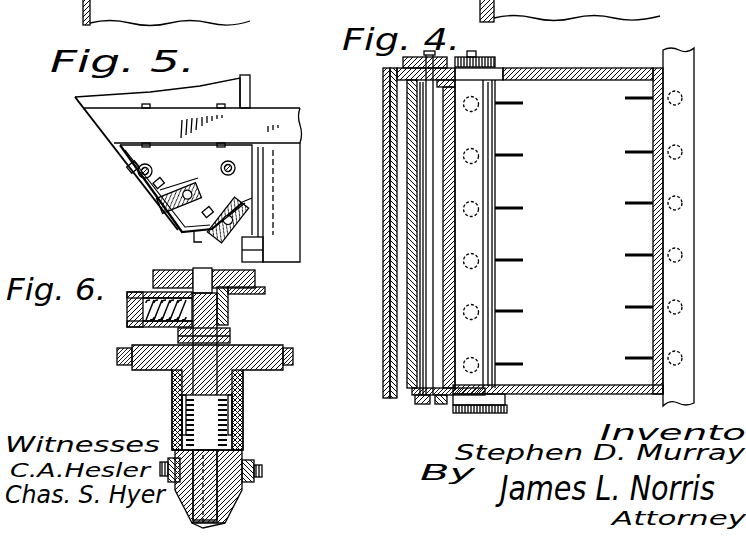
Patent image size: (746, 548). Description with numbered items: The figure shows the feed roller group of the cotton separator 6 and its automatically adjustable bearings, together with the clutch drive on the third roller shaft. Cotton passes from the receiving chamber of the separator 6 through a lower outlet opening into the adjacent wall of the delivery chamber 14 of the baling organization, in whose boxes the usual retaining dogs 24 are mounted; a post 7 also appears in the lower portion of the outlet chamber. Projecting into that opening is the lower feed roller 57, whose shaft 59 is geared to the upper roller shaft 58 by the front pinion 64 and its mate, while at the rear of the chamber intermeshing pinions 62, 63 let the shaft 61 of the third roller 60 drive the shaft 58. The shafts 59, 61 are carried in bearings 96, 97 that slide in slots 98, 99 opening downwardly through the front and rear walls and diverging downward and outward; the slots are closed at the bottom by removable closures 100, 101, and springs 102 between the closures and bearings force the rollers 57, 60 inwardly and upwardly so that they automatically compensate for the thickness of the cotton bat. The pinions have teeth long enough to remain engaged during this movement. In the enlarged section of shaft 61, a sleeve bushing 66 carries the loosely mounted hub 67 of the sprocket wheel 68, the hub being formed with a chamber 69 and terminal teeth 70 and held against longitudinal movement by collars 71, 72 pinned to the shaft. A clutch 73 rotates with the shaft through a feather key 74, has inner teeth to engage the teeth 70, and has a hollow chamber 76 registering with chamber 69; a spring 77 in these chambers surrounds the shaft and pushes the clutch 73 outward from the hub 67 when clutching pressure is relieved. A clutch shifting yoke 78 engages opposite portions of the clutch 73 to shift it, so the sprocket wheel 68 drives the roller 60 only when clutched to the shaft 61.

In FIG. 5, the separator 6 is at (168, 206).
In FIG. 5, the post 7 is at (250, 84).
In FIG. 5, the delivery chamber 14 is at (303, 242).
In FIG. 4, the delivery chamber 14 is at (623, 227).
In FIG. 4, the retaining dogs 24 is at (625, 103).
In FIG. 4, the feed roller 57 is at (496, 128).
In FIG. 5, the shaft 58 is at (235, 170).
In FIG. 5, the shaft 59 is at (240, 206).
In FIG. 4, the shaft 59 is at (472, 59).
In FIG. 4, the third roller 60 is at (395, 107).
In FIG. 6, the third roller 60 is at (155, 273).
In FIG. 5, the shaft 61 is at (215, 216).
In FIG. 4, the shaft 61 is at (433, 145).
In FIG. 6, the shaft 61 is at (192, 278).
In FIG. 4, the pinion 62 is at (508, 66).
In FIG. 4, the pinion 63 is at (398, 69).
In FIG. 4, the front pinion 64 is at (508, 409).
In FIG. 6, the sleeve bushing 66 is at (172, 380).
In FIG. 6, the hub 67 is at (178, 396).
In FIG. 6, the sprocket wheel 68 is at (134, 348).
In FIG. 6, the chamber 69 is at (244, 416).
In FIG. 6, the terminal teeth 70 is at (243, 433).
In FIG. 6, the collar 71 is at (230, 334).
In FIG. 6, the collar 72 is at (247, 384).
In FIG. 6, the clutch 73 is at (243, 492).
In FIG. 6, the feather key 74 is at (225, 516).
In FIG. 6, the hollow chamber 76 is at (243, 452).
In FIG. 6, the spring 77 is at (248, 406).
In FIG. 6, the clutch shifting yoke 78 is at (168, 488).
In FIG. 5, the bearing 96 is at (288, 227).
In FIG. 5, the bearing 97 is at (179, 178).
In FIG. 4, the bearing 97 is at (383, 122).
In FIG. 6, the bearing 97 is at (228, 303).
In FIG. 6, the slot 98 is at (205, 272).
In FIG. 5, the slot 99 is at (175, 218).
In FIG. 5, the removable closure 100 is at (227, 237).
In FIG. 5, the removable closure 101 is at (162, 198).
In FIG. 4, the removable closure 101 is at (405, 81).
In FIG. 5, the springs 102 is at (160, 195).
In FIG. 4, the springs 102 is at (403, 68).